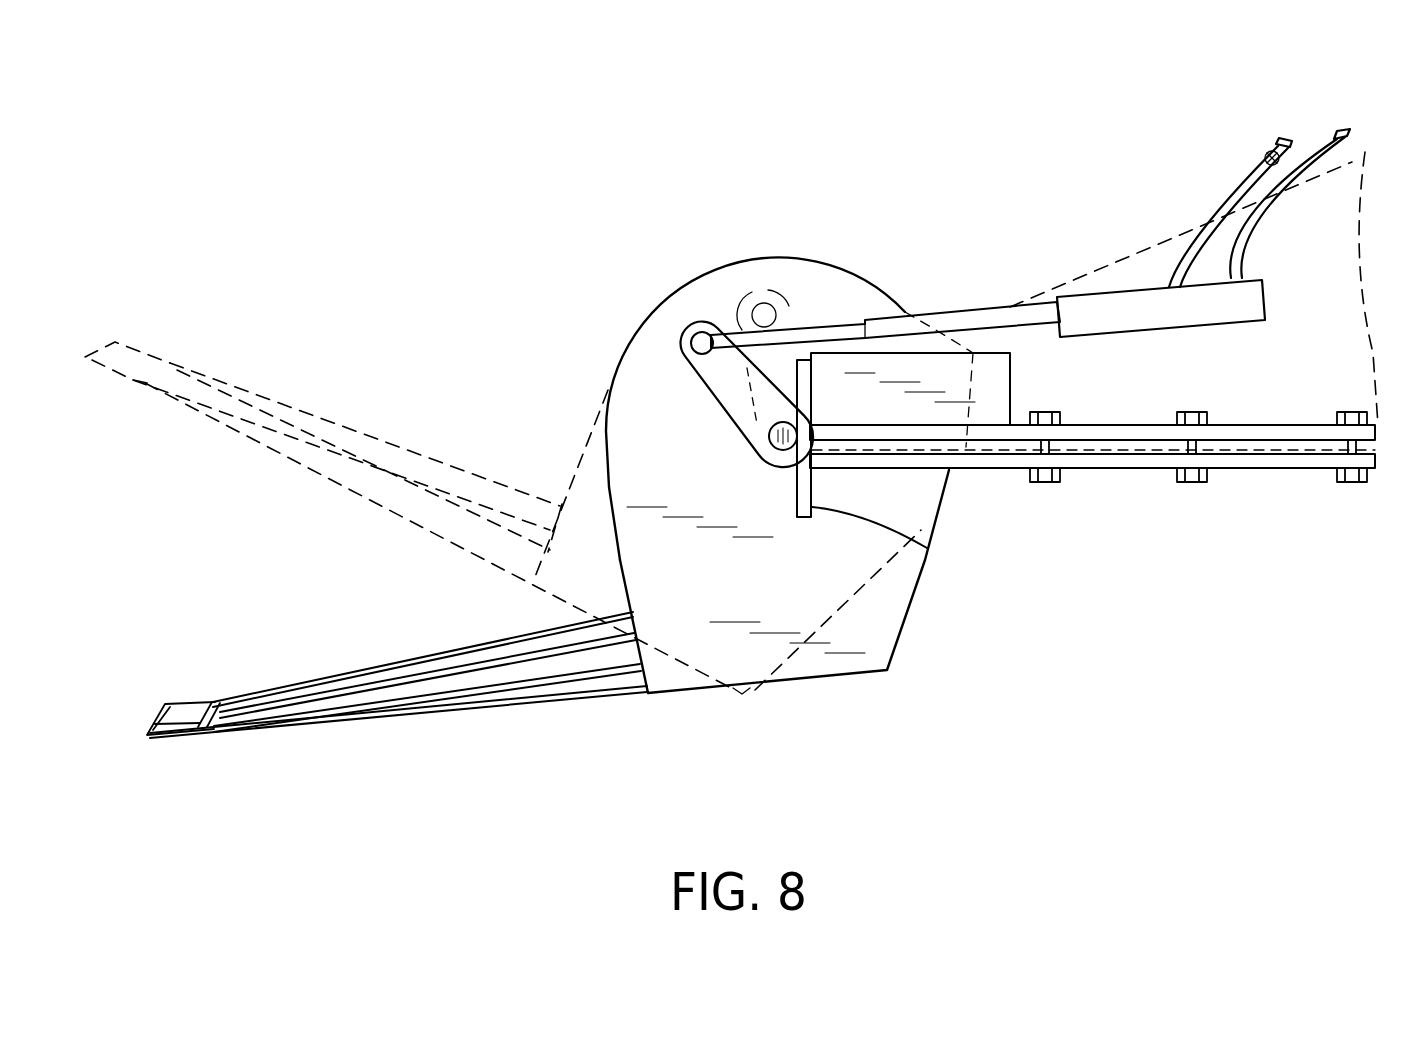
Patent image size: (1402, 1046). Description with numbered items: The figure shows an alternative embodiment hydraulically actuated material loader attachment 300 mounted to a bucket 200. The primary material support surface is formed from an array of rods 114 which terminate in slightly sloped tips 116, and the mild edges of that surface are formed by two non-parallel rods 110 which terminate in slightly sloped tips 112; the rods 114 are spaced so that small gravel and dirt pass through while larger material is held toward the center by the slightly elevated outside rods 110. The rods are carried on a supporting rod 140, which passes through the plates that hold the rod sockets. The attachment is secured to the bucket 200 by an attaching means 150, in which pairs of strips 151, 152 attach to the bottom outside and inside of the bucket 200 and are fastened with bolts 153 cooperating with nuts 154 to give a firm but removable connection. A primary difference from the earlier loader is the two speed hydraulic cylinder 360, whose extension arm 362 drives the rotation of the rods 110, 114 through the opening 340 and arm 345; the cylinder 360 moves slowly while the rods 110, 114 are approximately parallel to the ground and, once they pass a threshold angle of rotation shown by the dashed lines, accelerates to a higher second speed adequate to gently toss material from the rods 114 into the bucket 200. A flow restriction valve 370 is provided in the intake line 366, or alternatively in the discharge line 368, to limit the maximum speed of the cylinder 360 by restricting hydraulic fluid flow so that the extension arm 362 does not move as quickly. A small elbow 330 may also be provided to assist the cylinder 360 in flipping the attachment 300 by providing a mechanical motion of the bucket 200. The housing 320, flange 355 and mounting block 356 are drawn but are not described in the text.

The attachment 300 is at (333, 270).
The housing 320 is at (750, 280).
The elbow 330 is at (890, 673).
The opening 340 is at (693, 325).
The arm 345 is at (692, 376).
The supporting rod 140 is at (768, 436).
The extension arm 362 is at (978, 312).
The two speed hydraulic cylinder 360 is at (1105, 308).
The bucket 200 is at (1197, 231).
The intake line 366 is at (1216, 222).
The discharge line 368 is at (1328, 147).
The flow restriction valve 370 is at (1268, 153).
The attaching means 150 is at (1072, 420).
The strip 151 is at (1232, 462).
The strip 152 is at (1222, 428).
The bolt 153 is at (1352, 410).
The nut 154 is at (1342, 482).
The flange 355 is at (935, 520).
The mounting block 356 is at (937, 413).
The non-parallel rod 110 is at (493, 638).
The sloped tip 112 is at (227, 703).
The rod 114 is at (462, 705).
The sloped tip 116 is at (162, 736).